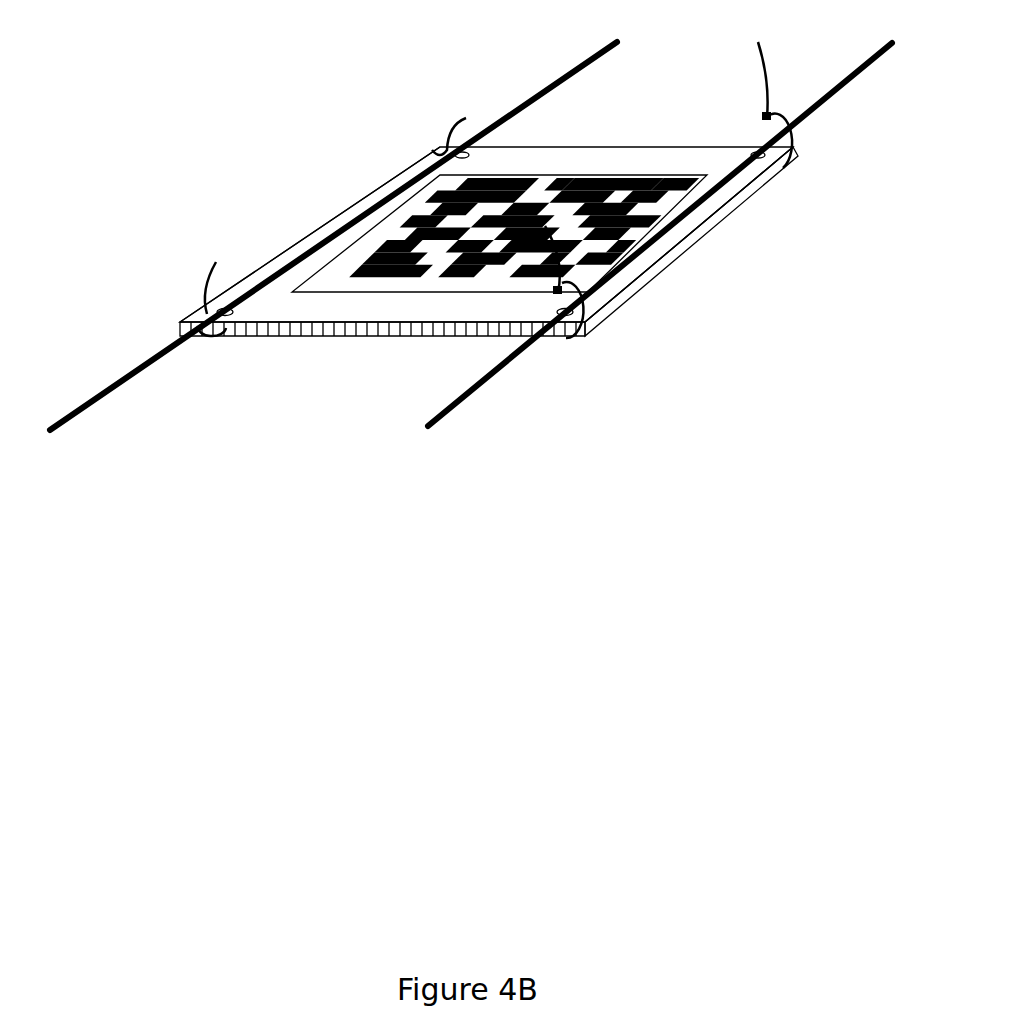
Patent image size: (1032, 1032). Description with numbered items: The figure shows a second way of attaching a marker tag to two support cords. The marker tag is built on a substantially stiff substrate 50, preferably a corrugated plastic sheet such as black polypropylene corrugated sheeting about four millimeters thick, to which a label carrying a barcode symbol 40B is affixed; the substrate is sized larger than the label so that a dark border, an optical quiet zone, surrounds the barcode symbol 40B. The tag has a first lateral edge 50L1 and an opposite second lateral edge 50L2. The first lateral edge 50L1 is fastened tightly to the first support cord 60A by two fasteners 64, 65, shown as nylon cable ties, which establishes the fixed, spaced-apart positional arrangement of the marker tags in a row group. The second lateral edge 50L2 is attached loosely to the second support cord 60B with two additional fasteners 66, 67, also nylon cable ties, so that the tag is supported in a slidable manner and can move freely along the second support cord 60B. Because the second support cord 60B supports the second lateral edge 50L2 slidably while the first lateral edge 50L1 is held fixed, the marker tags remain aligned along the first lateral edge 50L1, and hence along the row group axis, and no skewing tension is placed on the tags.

The barcode symbol 40B is at (420, 208).
The substrate 50 is at (392, 334).
The first lateral edge 50L1 is at (303, 240).
The second lateral edge 50L2 is at (690, 245).
The first support cord 60A is at (118, 392).
The second support cord 60B is at (450, 413).
The fastener 64 is at (205, 300).
The fastener 65 is at (443, 147).
The fastener 66 is at (592, 338).
The fastener 67 is at (783, 168).